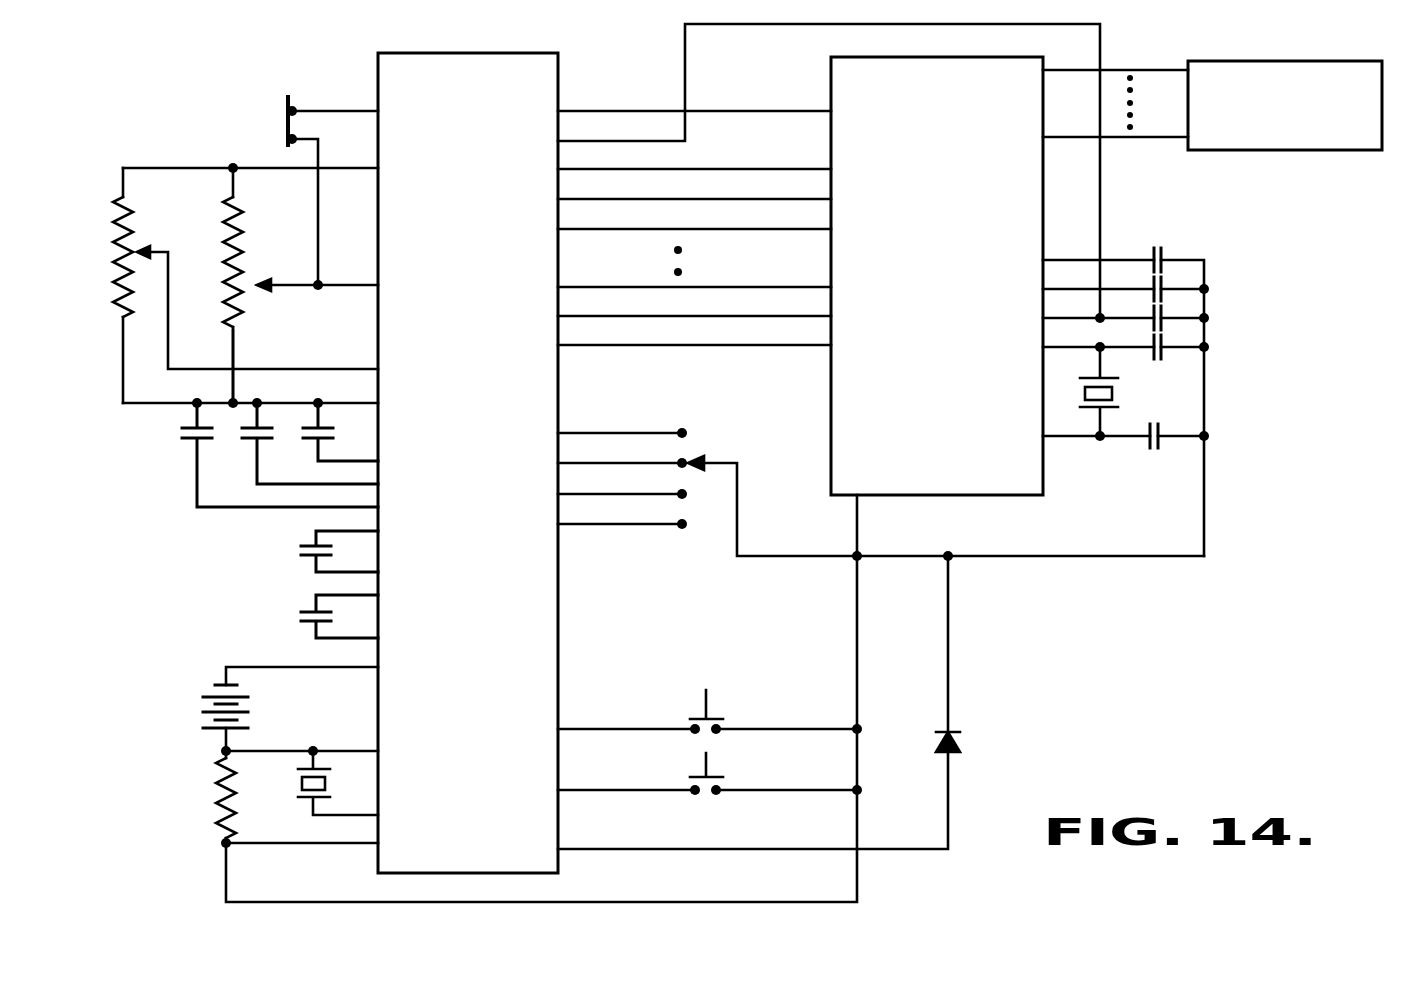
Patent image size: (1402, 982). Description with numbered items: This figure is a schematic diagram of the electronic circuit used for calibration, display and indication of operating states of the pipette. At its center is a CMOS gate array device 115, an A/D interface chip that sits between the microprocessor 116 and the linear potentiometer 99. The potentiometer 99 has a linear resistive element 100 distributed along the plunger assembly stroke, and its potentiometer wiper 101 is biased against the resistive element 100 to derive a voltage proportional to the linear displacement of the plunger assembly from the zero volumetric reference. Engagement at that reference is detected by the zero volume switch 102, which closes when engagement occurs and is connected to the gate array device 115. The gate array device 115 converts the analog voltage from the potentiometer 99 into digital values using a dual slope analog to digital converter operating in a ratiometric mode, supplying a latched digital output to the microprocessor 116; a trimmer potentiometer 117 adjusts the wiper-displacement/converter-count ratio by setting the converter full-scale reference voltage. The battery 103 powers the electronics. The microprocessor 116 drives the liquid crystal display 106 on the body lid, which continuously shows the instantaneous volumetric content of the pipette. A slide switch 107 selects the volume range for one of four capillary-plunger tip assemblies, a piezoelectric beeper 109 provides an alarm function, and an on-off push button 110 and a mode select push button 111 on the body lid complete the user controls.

The potentiometer 99 is at (256, 272).
The linear resistive element 100 is at (240, 323).
The potentiometer wiper 101 is at (280, 288).
The zero volume switch 102 is at (282, 115).
The battery 103 is at (200, 710).
The liquid crystal display 106 is at (1298, 97).
The slide switch 107 is at (692, 453).
The piezoelectric beeper 109 is at (300, 788).
The on-off push button 110 is at (712, 710).
The mode select push button 111 is at (712, 772).
The CMOS gate array device 115 is at (484, 530).
The microprocessor 116 is at (952, 238).
The trimmer potentiometer 117 is at (120, 210).